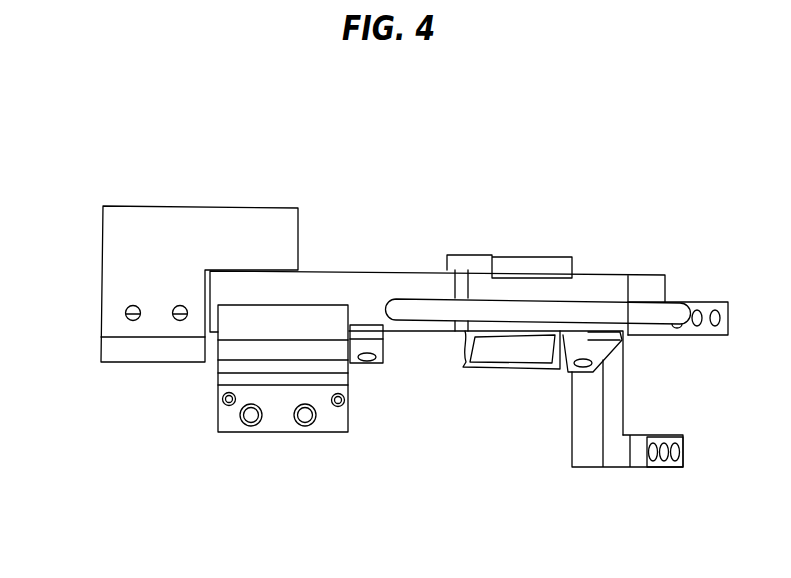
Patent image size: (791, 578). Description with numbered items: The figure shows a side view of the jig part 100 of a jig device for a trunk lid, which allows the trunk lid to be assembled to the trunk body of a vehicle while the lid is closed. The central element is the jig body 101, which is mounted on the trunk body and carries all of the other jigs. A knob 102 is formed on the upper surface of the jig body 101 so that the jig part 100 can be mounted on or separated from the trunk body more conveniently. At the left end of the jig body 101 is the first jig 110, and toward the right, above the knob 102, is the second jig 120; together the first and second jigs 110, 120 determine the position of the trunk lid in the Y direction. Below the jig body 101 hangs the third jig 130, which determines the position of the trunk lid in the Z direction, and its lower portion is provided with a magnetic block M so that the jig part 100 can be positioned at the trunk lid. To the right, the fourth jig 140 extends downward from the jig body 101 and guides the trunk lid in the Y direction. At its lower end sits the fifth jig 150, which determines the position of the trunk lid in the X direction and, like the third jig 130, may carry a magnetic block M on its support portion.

The jig part 100 is at (82, 124).
The jig body 101 is at (354, 282).
The knob 102 is at (470, 303).
The first jig 110 is at (197, 212).
The second jig 120 is at (545, 268).
The third jig 130 is at (343, 378).
The magnetic block M is at (250, 415).
The fourth jig 140 is at (568, 373).
The fifth jig 150 is at (662, 467).